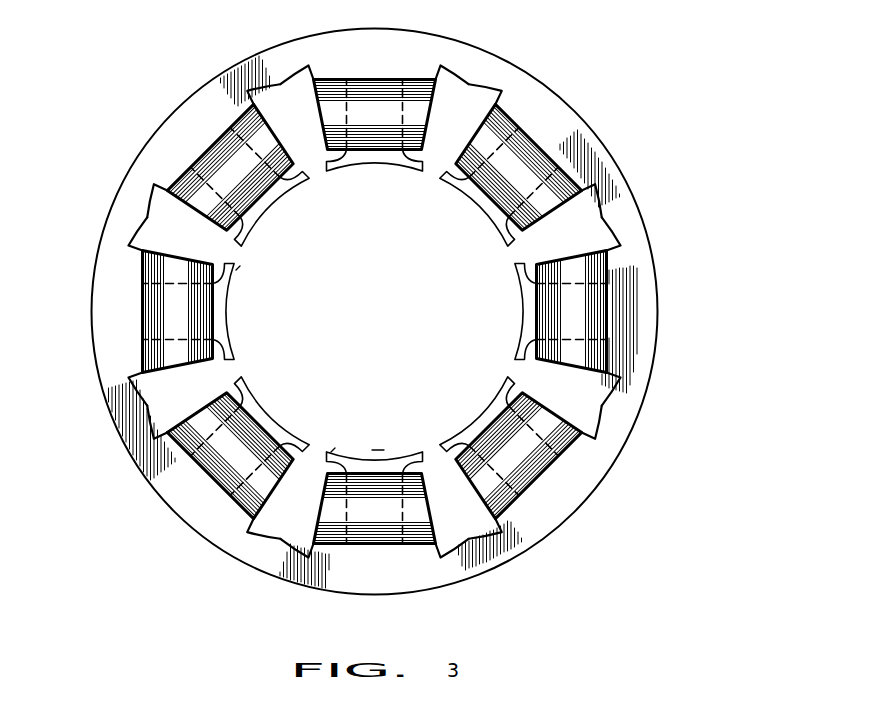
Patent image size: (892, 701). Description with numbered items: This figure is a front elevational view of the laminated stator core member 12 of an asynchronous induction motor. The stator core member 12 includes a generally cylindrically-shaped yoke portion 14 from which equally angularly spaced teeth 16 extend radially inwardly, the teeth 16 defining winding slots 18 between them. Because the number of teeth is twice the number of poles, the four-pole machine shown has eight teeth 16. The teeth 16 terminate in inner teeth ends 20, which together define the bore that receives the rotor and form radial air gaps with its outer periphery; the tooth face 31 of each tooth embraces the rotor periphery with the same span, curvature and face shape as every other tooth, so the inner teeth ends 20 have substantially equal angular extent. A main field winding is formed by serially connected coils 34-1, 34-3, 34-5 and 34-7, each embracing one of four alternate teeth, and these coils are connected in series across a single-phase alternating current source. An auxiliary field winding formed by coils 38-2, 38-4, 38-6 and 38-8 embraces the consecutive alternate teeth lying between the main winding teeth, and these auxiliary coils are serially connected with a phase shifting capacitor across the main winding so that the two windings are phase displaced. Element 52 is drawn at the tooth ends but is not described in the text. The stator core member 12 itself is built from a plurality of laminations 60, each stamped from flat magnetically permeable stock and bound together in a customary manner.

The stator core member 12 is at (552, 85).
The yoke portion 14 is at (390, 58).
The teeth 16 is at (326, 76).
The winding slots 18 is at (290, 107).
The inner teeth ends 20 is at (477, 203).
The tooth face 31 is at (378, 447).
The main field winding coil 34-1 is at (430, 70).
The main field winding coil 34-3 is at (612, 268).
The main field winding coil 34-5 is at (424, 544).
The main field winding coil 34-7 is at (162, 312).
The auxiliary field winding coil 38-2 is at (537, 147).
The auxiliary field winding coil 38-4 is at (547, 468).
The auxiliary field winding coil 38-6 is at (210, 478).
The auxiliary field winding coil 38-8 is at (207, 153).
The pole tip edge 52 is at (236, 272).
The laminations 60 is at (658, 246).